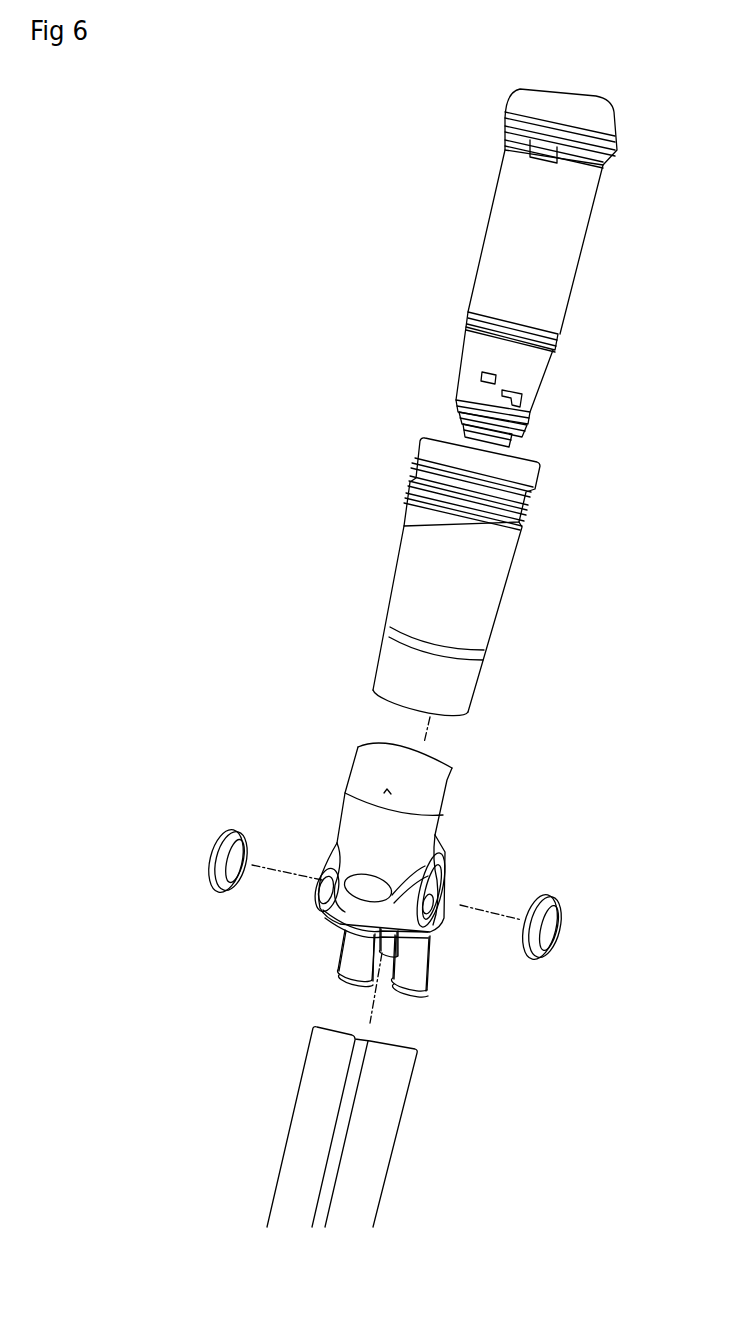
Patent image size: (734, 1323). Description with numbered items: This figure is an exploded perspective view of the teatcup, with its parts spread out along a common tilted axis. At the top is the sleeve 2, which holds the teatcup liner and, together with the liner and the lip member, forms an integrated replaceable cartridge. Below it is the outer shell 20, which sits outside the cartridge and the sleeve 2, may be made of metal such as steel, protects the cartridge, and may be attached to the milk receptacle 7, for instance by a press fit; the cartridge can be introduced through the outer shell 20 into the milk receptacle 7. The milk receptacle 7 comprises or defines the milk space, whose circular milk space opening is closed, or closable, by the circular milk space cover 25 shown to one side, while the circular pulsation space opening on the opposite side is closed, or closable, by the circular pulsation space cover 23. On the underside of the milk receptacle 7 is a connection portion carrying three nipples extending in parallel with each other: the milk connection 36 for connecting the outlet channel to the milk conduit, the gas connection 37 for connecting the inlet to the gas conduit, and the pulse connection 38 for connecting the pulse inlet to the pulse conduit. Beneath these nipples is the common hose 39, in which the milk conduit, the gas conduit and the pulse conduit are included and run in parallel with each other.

The sleeve 2 is at (500, 253).
The outer shell 20 is at (433, 546).
The milk receptacle 7 is at (364, 808).
The milk space cover 25 is at (220, 828).
The pulsation space cover 23 is at (558, 925).
The gas connection 37 is at (388, 942).
The milk connection 36 is at (342, 962).
The pulse connection 38 is at (417, 960).
The common hose 39 is at (327, 1083).